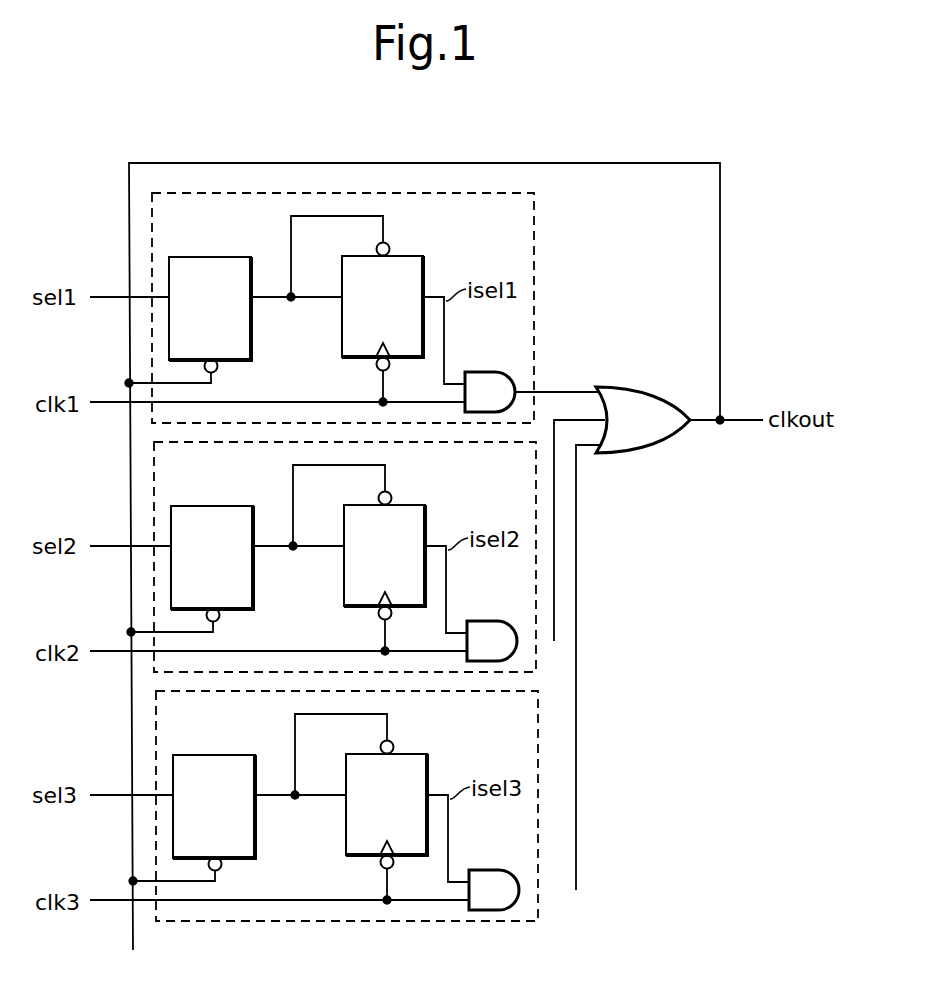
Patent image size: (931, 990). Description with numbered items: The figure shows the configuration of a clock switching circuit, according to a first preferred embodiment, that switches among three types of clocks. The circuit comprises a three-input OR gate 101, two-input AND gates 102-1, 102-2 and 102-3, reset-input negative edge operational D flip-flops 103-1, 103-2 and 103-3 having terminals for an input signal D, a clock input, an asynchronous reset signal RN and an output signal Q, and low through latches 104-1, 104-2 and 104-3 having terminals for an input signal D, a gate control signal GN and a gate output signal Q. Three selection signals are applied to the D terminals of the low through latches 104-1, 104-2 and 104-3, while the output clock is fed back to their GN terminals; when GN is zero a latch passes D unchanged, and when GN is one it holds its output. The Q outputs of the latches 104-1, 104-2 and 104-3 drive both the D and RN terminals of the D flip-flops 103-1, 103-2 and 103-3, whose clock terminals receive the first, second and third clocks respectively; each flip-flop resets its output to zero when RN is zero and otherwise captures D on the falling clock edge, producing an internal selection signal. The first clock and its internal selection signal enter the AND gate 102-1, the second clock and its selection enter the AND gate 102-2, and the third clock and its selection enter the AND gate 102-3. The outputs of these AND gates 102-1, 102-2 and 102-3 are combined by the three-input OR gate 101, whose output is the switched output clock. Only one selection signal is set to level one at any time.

The three-input OR gate 101 is at (622, 387).
The two-input AND gate 102-1 is at (478, 372).
The two-input AND gate 102-2 is at (488, 612).
The two-input AND gate 102-3 is at (490, 861).
The reset-input negative edge operational D flip-flop 103-1 is at (412, 256).
The reset-input negative edge operational D flip-flop 103-2 is at (404, 536).
The reset-input negative edge operational D flip-flop 103-3 is at (406, 785).
The low through latch 104-1 is at (205, 257).
The low through latch 104-2 is at (212, 538).
The low through latch 104-3 is at (214, 787).